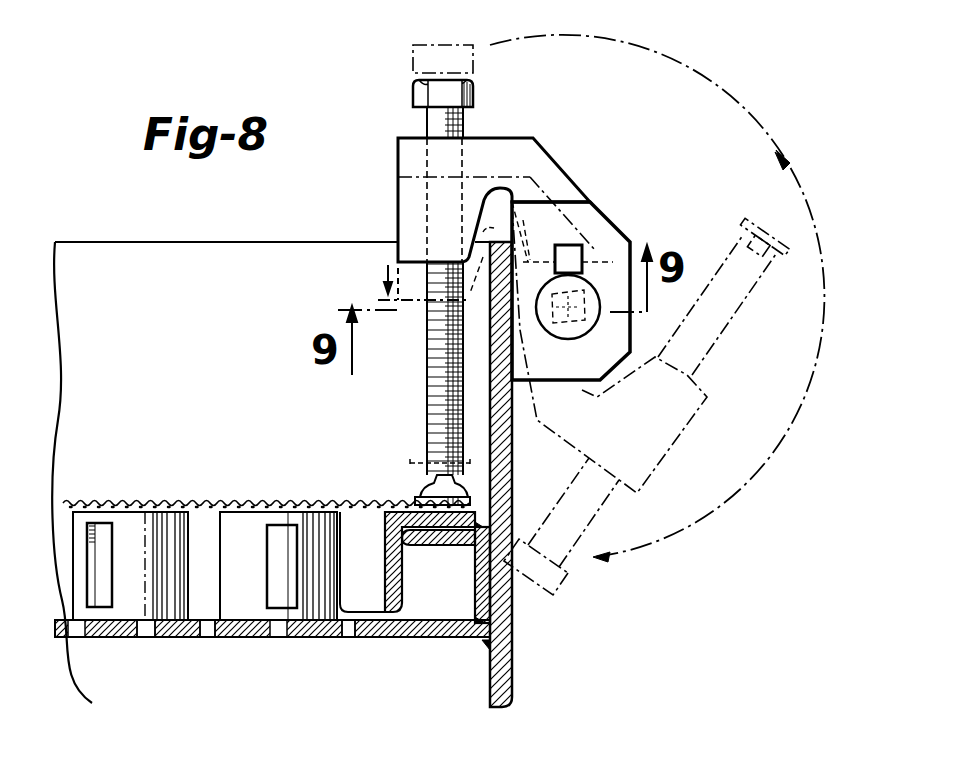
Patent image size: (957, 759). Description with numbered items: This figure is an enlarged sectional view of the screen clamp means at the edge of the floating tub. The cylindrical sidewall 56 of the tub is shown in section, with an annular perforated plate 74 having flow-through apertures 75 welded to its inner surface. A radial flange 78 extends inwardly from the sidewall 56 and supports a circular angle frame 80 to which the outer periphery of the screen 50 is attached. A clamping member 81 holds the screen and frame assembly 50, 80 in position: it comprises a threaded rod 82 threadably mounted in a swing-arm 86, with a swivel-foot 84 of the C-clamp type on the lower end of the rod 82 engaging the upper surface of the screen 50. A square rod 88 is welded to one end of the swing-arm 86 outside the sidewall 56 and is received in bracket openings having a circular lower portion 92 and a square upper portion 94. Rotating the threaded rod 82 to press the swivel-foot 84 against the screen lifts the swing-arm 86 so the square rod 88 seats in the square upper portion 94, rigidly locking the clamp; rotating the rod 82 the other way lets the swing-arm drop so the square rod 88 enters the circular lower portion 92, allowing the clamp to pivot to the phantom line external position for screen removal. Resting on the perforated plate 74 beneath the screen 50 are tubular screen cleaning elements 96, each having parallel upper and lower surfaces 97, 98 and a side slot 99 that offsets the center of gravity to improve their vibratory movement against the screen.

The screen 50 is at (128, 503).
The cylindrical sidewall 56 is at (514, 680).
The annular perforated plate 74 is at (238, 638).
The flow-through apertures 75 is at (145, 640).
The radial flange 78 is at (427, 545).
The circular angle frame 80 is at (400, 512).
The clamping member 81 is at (392, 144).
The threaded rod 82 is at (432, 387).
The swivel-foot 84 is at (430, 493).
The swing-arm 86 is at (530, 158).
The square rod 88 is at (573, 258).
The circular lower portion 92 is at (565, 334).
The square upper portion 94 is at (563, 247).
The screen cleaning element 96 is at (80, 577).
The upper surface 97 is at (242, 525).
The lower surface 98 is at (326, 638).
The side slot 99 is at (88, 537).